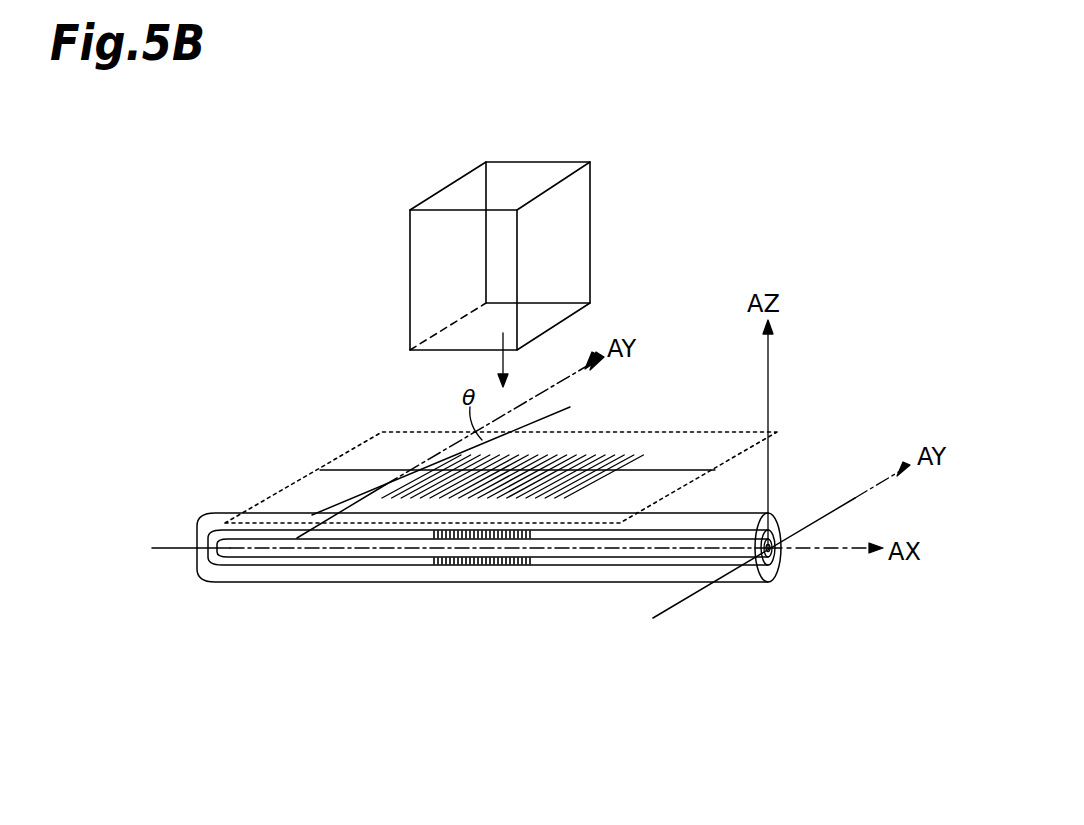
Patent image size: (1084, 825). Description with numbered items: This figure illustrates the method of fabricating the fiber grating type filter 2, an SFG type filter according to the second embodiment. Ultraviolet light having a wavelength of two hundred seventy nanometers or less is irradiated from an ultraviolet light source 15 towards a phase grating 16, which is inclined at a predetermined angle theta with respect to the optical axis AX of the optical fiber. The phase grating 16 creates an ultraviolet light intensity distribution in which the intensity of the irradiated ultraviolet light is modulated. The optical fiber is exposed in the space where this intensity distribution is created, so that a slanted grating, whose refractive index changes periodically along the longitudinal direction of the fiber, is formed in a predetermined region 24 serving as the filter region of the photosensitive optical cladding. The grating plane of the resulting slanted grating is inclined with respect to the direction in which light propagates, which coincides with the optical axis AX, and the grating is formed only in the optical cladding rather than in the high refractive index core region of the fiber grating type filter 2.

The fiber grating type filter 2 is at (736, 628).
The ultraviolet light source 15 is at (572, 258).
The phase grating 16 is at (650, 462).
The predetermined region 24 is at (536, 571).